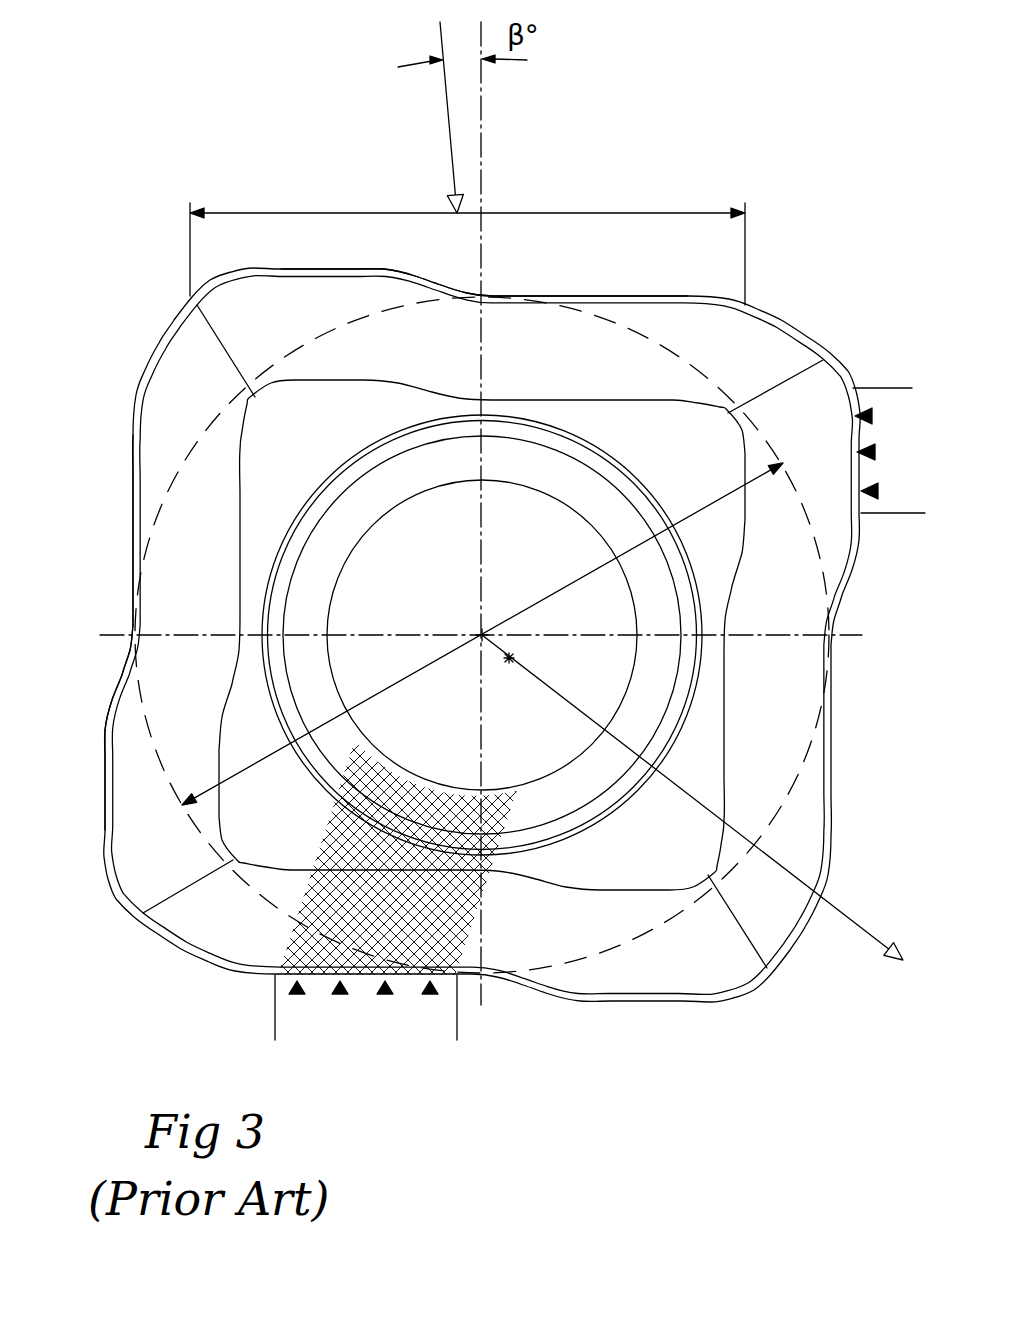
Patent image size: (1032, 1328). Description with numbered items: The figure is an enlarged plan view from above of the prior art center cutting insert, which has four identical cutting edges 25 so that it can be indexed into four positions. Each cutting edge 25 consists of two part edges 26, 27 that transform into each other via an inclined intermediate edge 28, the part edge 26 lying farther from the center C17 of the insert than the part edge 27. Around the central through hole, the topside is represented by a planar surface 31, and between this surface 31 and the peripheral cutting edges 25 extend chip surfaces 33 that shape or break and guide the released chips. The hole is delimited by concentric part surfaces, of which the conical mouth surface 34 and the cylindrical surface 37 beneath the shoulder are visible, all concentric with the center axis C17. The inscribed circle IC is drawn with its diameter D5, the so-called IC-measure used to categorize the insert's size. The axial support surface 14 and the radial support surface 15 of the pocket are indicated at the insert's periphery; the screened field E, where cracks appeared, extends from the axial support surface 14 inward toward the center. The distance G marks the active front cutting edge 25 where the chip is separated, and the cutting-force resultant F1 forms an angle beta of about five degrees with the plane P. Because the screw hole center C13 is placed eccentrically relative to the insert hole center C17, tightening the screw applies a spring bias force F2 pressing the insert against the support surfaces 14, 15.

The axial side support surface 14 is at (280, 985).
The radial side support surface 15 is at (866, 398).
The cutting edge 25 is at (507, 290).
The part edge 26 is at (328, 268).
The part edge 27 is at (622, 295).
The inclined intermediate edge 28 is at (428, 282).
The top surface 31 is at (316, 461).
The chip surfaces 33 is at (211, 559).
The mouth surface 34 is at (576, 818).
The cylindrical surface 37 is at (395, 512).
The center of screw hole C13 is at (512, 660).
The center of cutting insert C17 is at (481, 633).
The inscribed circle diameter D5 is at (482, 634).
The screened field E is at (337, 835).
The cutting-force resultant F1 is at (434, 117).
The spring bias force F2 is at (848, 925).
The active cutting edge distance G is at (467, 244).
The inscribed circle IC is at (800, 497).
The plane P is at (481, 147).